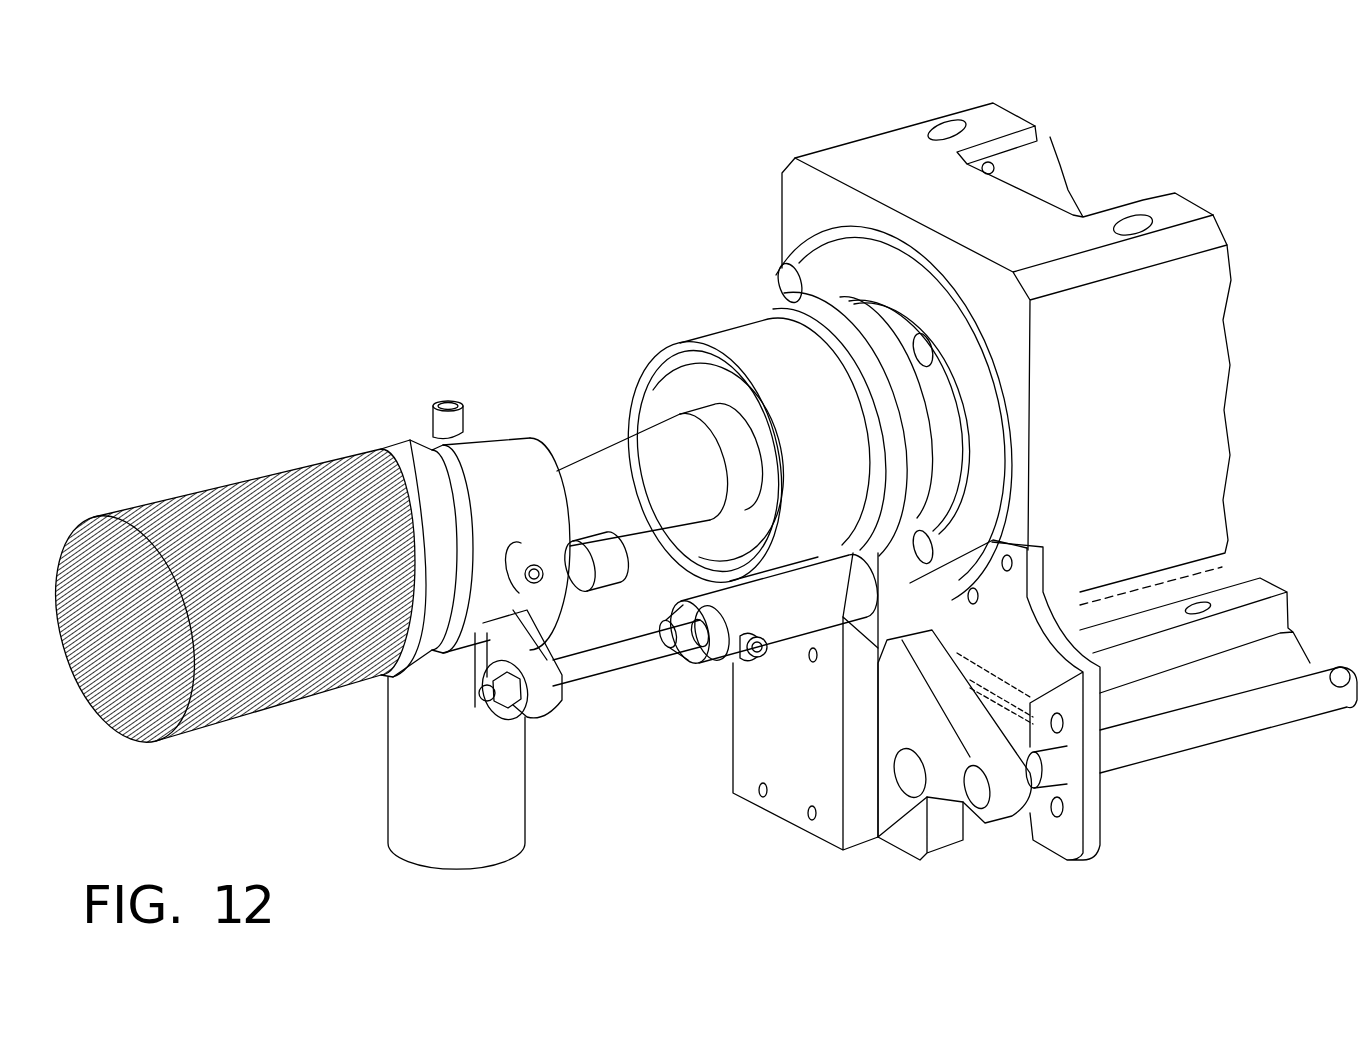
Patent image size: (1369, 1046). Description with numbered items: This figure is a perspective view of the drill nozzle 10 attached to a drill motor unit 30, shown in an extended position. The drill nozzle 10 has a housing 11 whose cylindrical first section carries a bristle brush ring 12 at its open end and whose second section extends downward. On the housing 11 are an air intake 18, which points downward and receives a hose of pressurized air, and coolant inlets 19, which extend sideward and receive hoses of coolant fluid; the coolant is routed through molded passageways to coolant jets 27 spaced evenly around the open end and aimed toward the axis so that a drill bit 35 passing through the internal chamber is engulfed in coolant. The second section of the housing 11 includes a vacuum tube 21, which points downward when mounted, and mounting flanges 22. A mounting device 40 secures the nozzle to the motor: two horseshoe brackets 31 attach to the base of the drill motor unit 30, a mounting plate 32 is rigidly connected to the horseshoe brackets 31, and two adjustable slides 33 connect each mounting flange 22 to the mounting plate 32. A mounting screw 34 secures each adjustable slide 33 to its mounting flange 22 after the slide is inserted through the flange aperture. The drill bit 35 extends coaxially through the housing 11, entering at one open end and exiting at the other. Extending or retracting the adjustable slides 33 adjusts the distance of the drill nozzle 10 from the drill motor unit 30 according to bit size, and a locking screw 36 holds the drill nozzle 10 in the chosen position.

The drill nozzle 10 is at (367, 378).
The housing 11 is at (487, 440).
The bristle brush ring 12 is at (358, 447).
The air intake 18 is at (447, 420).
The coolant inlets 19 is at (547, 588).
The vacuum tube 21 is at (422, 843).
The mounting flanges 22 is at (547, 707).
The coolant jets 27 is at (310, 470).
The drill motor unit 30 is at (1067, 113).
The horseshoe brackets 31 is at (1100, 828).
The mounting plate 32 is at (815, 781).
The adjustable slides 33 is at (610, 670).
The mounting screw 34 is at (507, 703).
The drill bit 35 is at (573, 480).
The locking screw 36 is at (757, 660).
The mounting device 40 is at (975, 872).